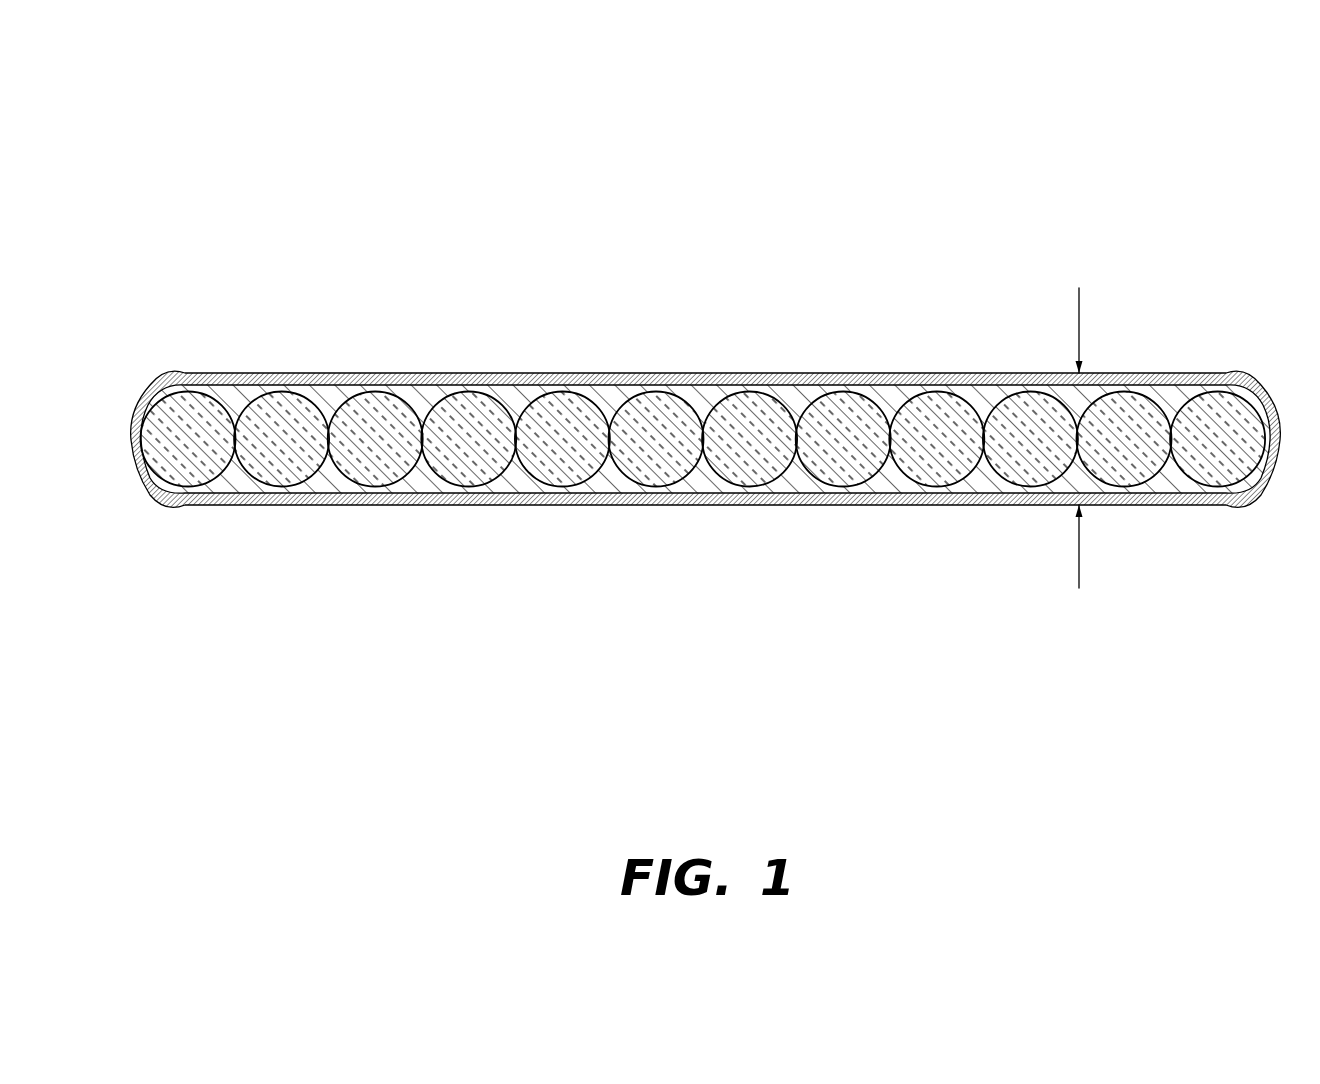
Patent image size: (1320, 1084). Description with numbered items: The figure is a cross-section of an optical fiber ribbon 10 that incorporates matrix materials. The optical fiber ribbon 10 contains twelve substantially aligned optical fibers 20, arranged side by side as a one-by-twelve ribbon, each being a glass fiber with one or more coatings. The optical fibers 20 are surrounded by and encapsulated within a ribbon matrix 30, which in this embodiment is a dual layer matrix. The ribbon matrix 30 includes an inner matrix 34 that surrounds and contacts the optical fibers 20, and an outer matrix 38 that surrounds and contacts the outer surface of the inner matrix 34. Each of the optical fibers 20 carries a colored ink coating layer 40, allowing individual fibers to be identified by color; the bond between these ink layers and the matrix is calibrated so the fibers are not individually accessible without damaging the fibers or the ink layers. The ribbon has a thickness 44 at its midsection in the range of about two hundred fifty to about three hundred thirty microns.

The optical fiber ribbon 10 is at (706, 329).
The optical fibers 20 is at (282, 400).
The ribbon matrix 30 is at (706, 391).
The inner matrix 34 is at (798, 393).
The outer matrix 38 is at (893, 380).
The colored ink coating layer 40 is at (563, 488).
The thickness 44 is at (1079, 316).